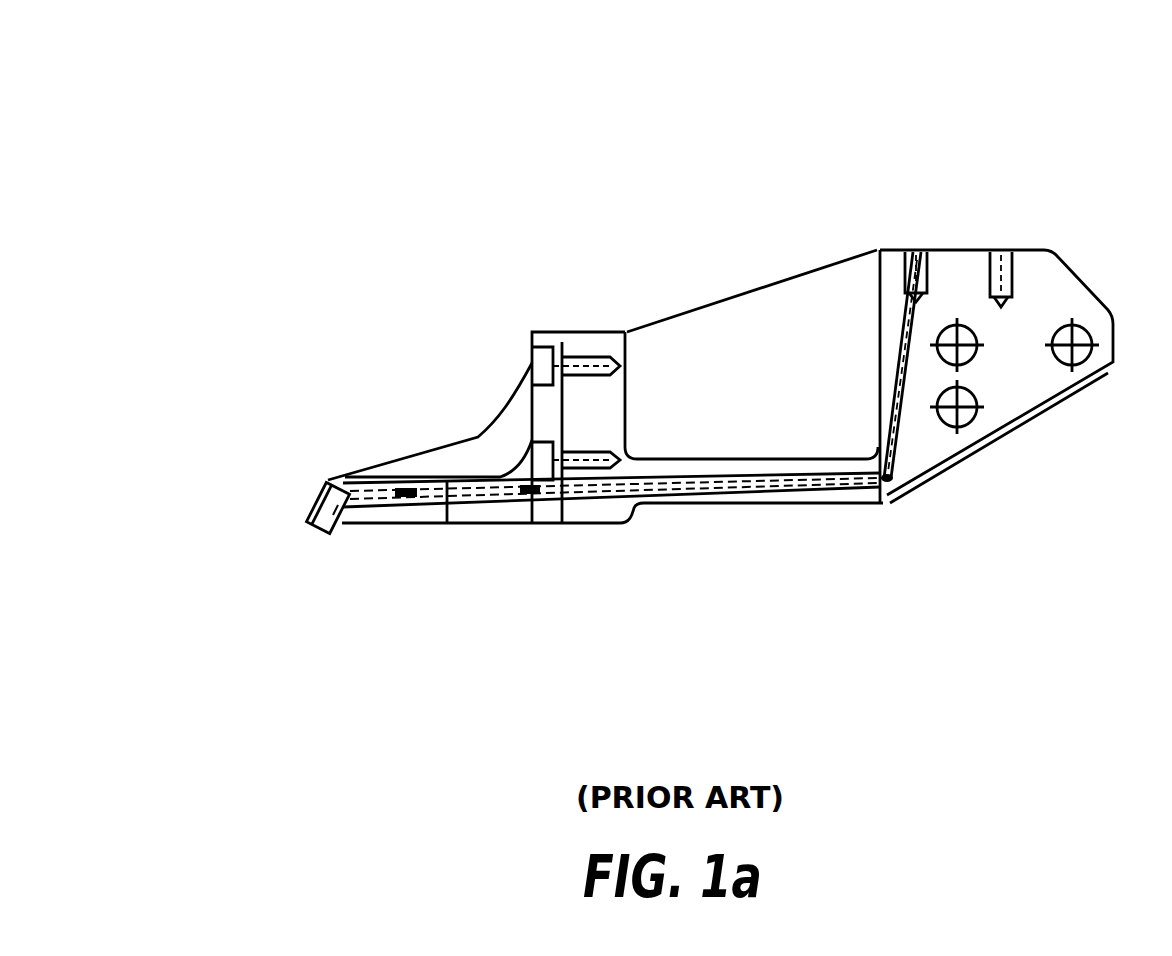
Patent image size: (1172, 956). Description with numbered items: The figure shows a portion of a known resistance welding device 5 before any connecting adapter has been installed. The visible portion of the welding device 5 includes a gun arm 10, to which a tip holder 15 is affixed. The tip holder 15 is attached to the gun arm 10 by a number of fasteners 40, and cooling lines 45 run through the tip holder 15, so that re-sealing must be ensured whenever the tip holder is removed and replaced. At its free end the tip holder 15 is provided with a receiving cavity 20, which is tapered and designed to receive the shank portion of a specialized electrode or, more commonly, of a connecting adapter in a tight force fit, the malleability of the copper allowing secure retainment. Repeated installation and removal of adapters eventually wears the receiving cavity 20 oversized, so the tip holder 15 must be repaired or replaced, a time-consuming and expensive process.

The resistance welding device 5 is at (160, 135).
The gun arm 10 is at (746, 259).
The tip holder 15 is at (375, 430).
The receiving cavity 20 is at (307, 522).
The fasteners 40 is at (538, 358).
The cooling lines 45 is at (542, 515).